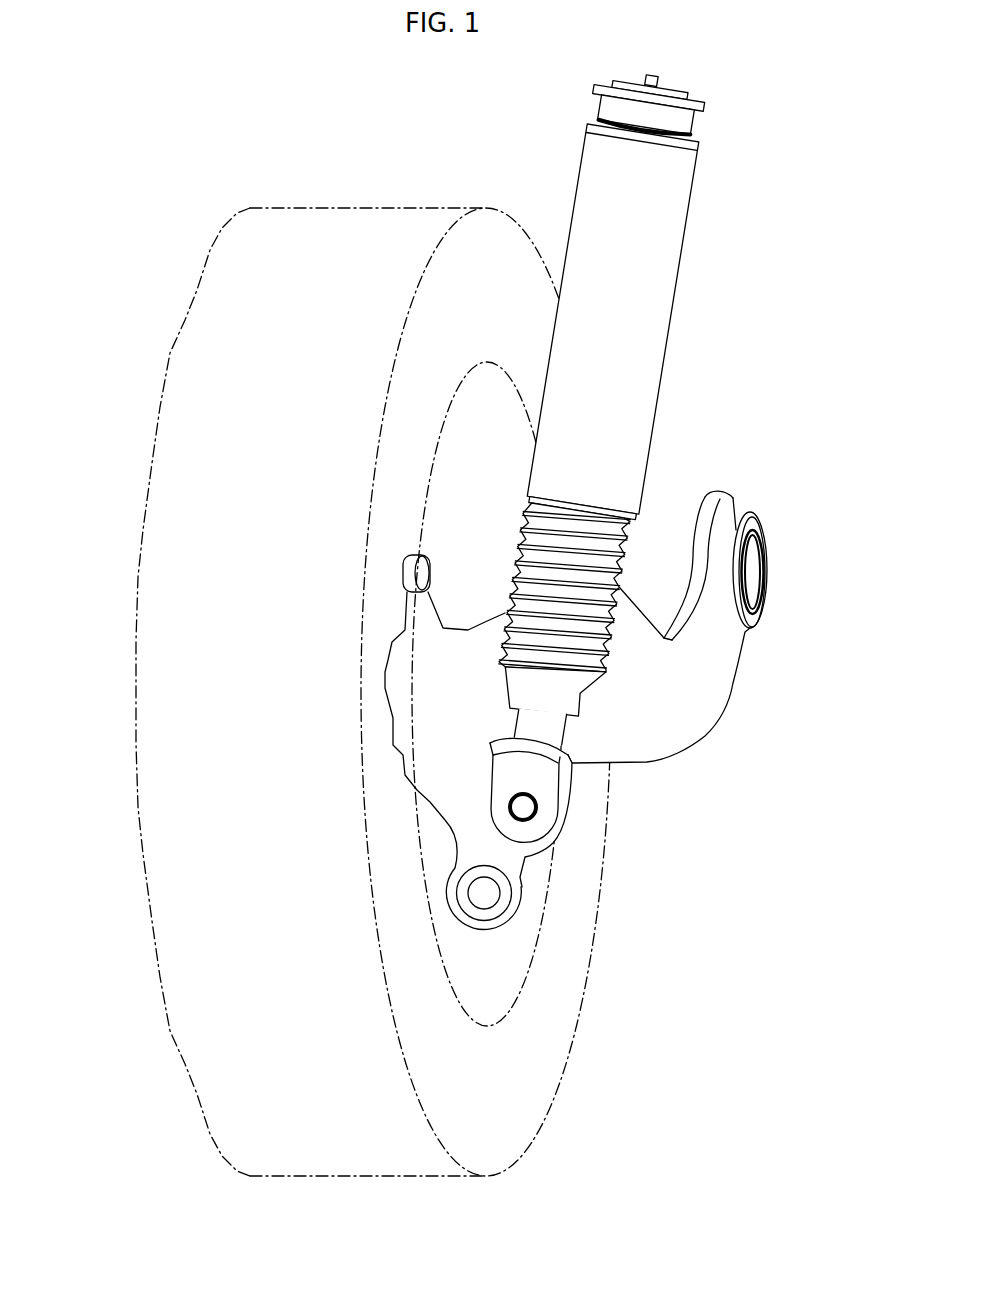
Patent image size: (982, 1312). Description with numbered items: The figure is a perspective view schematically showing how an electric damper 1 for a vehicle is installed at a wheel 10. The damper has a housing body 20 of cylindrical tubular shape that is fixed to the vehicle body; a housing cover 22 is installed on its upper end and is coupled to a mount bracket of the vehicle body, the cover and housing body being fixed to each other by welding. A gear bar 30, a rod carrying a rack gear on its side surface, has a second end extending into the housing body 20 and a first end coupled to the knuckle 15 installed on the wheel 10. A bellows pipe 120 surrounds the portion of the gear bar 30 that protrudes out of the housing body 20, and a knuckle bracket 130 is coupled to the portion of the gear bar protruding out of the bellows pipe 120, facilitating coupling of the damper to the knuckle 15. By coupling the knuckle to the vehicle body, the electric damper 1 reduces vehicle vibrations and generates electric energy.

The electric damper 1 is at (602, 498).
The wheel 10 is at (183, 224).
The knuckle 15 is at (503, 858).
The housing body 20 is at (663, 212).
The housing cover 22 is at (685, 123).
The gear bar 30 is at (583, 731).
The bellows pipe 120 is at (630, 547).
The knuckle bracket 130 is at (535, 768).